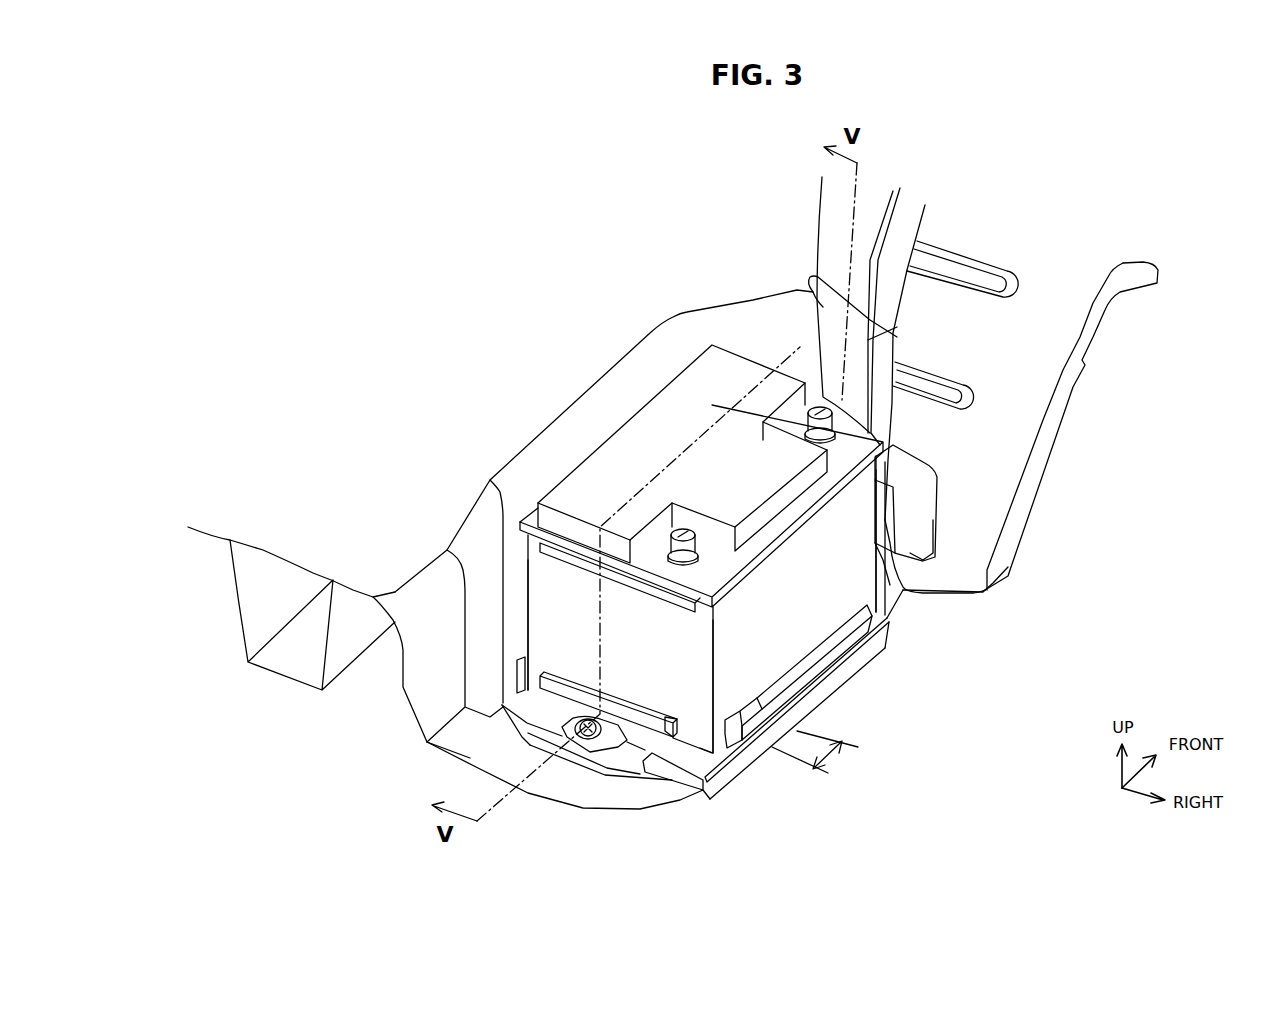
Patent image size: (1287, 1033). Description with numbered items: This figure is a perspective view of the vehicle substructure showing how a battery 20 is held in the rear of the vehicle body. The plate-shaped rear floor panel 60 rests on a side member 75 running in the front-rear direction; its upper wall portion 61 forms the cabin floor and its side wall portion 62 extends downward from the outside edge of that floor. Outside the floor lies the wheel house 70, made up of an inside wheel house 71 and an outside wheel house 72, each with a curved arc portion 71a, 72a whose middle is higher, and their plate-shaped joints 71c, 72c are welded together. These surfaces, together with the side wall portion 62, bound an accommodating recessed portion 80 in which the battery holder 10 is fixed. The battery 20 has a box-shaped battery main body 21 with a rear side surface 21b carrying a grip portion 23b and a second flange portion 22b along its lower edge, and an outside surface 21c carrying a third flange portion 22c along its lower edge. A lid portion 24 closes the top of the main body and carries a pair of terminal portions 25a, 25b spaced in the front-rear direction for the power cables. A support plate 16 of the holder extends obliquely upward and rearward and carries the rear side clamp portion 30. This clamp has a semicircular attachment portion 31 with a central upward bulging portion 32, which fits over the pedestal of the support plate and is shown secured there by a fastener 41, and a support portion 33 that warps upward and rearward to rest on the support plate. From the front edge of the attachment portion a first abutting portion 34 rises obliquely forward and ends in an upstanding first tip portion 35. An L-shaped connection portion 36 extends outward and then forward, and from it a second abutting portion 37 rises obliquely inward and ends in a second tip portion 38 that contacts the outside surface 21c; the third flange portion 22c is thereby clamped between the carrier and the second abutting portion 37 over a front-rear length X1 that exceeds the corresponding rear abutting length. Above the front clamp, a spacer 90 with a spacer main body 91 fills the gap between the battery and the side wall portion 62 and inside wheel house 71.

The battery holder 10 is at (838, 658).
The support plate 16 is at (668, 772).
The battery 20 is at (641, 378).
The battery main body 21 is at (730, 615).
The rear side surface 21b is at (688, 645).
The outside surface 21c is at (797, 567).
The second flange portion 22b is at (540, 682).
The third flange portion 22c is at (817, 655).
The grip portion 23b is at (545, 563).
The lid portion 24 is at (752, 485).
The terminal portion 25a is at (817, 405).
The terminal portion 25b is at (692, 522).
The rear side clamp portion 30 is at (645, 762).
The attachment portion 31 is at (512, 728).
The bulging portion 32 is at (612, 756).
The support portion 33 is at (542, 740).
The first abutting portion 34 is at (665, 732).
The first tip portion 35 is at (623, 707).
The connection portion 36 is at (730, 787).
The second abutting portion 37 is at (753, 707).
The second tip portion 38 is at (737, 717).
The fastening bolt 41 is at (580, 750).
The rear floor panel 60 is at (333, 528).
The upper wall portion 61 is at (367, 490).
The side wall portion 62 is at (713, 320).
The wheel house 70 is at (1172, 226).
The inside wheel house 71 is at (833, 217).
The arc portion 71a is at (808, 285).
The joint 71c is at (885, 203).
The outside wheel house 72 is at (1043, 367).
The arc portion 72a is at (947, 340).
The joint 72c is at (910, 205).
The side member 75 is at (245, 617).
The accommodating recessed portion 80 is at (665, 297).
The spacer 90 is at (955, 468).
The spacer main body 91 is at (903, 460).
The length X1 is at (815, 752).